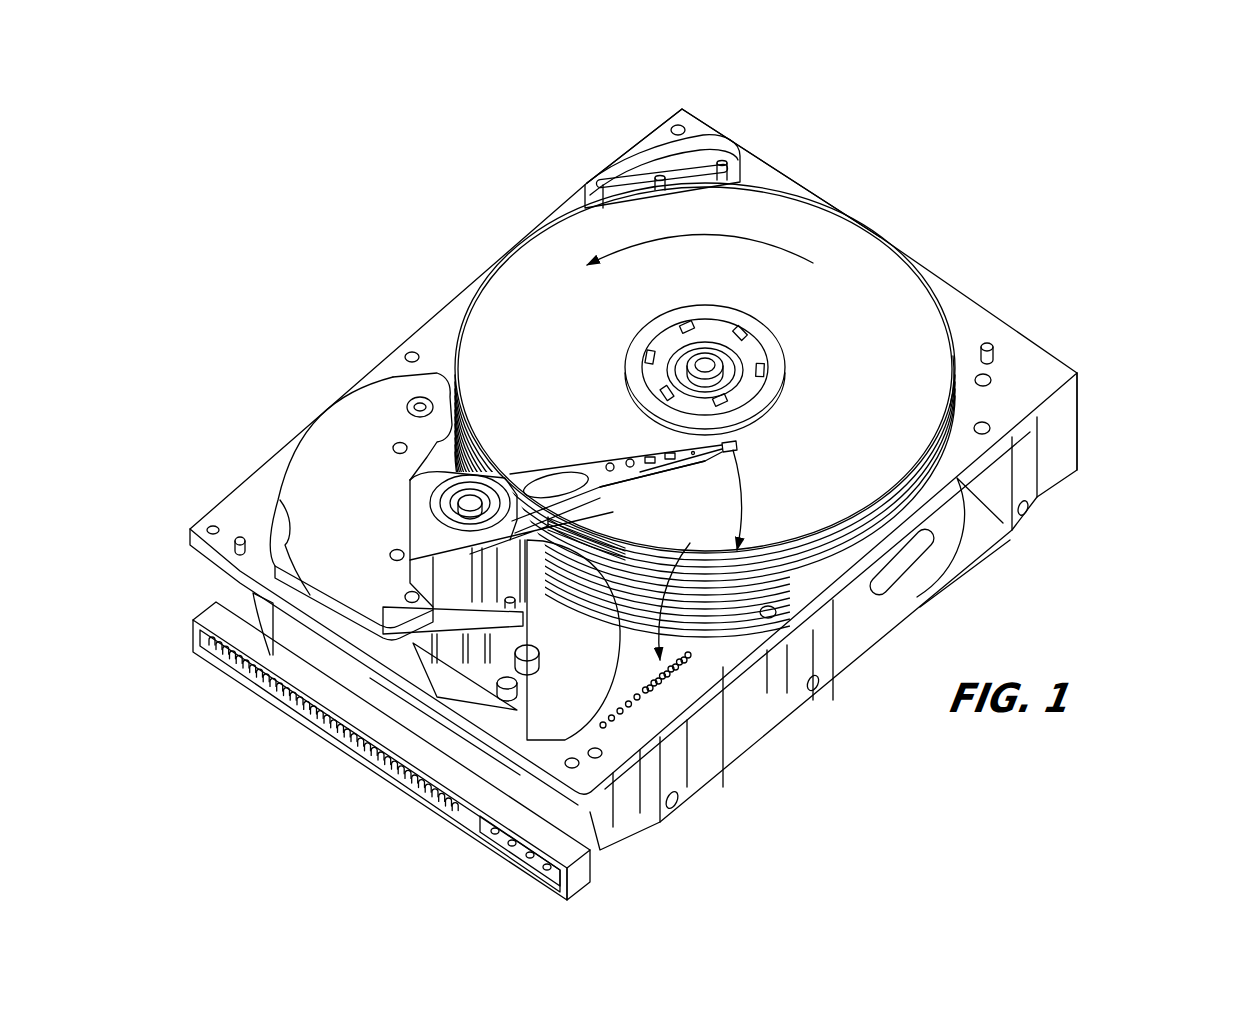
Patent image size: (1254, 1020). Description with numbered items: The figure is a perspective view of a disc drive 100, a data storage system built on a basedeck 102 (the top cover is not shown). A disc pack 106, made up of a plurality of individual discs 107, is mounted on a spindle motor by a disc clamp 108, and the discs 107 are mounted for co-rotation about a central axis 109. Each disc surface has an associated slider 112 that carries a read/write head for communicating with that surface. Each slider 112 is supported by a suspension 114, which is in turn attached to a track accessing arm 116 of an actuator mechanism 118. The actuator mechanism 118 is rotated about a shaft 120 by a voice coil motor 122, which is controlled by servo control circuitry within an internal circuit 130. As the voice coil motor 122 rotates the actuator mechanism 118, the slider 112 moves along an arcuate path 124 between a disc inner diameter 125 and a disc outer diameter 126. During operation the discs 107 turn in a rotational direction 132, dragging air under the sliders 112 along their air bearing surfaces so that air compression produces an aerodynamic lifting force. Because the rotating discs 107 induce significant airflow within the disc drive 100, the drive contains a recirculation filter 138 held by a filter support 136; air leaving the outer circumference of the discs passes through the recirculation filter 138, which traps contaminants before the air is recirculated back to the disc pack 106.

The disc drive 100 is at (935, 233).
The basedeck 102 is at (1025, 375).
The disc pack 106 is at (805, 230).
The individual discs 107 is at (910, 297).
The disc clamp 108 is at (667, 340).
The central axis 109 is at (706, 366).
The slider 112 is at (738, 447).
The suspension 114 is at (680, 447).
The track accessing arm 116 is at (598, 488).
The actuator mechanism 118 is at (457, 470).
The shaft 120 is at (470, 497).
The voice coil motor 122 is at (337, 457).
The arcuate path 124 is at (741, 503).
The disc inner diameter 125 is at (785, 375).
The disc outer diameter 126 is at (950, 387).
The internal circuit 130 is at (662, 622).
The rotational direction 132 is at (633, 243).
The filter support 136 is at (747, 153).
The recirculation filter 138 is at (688, 124).